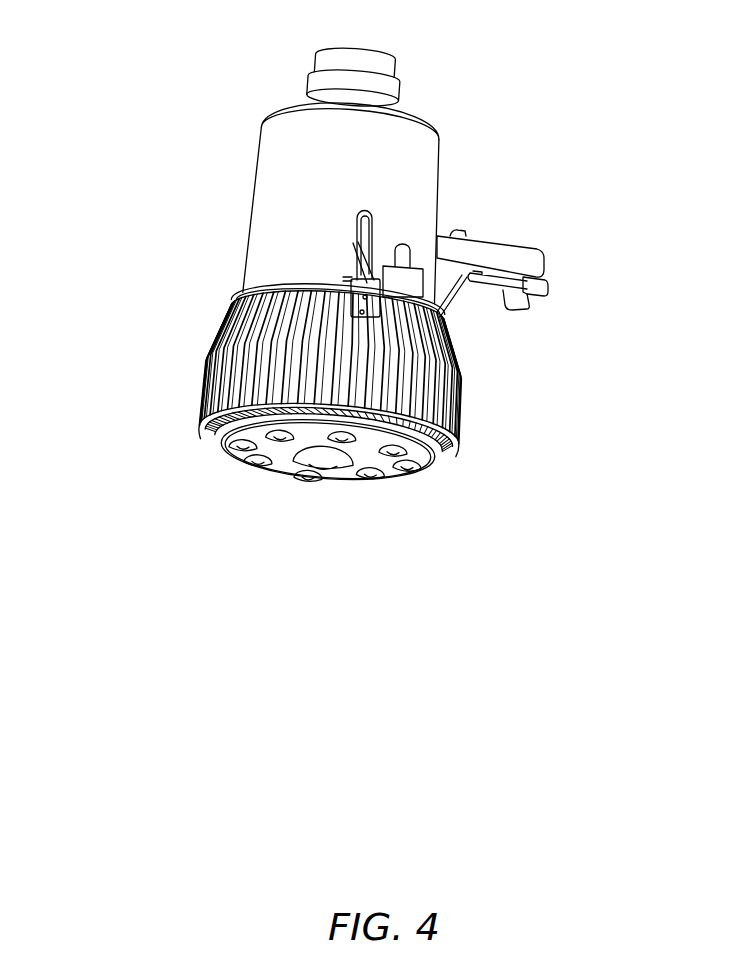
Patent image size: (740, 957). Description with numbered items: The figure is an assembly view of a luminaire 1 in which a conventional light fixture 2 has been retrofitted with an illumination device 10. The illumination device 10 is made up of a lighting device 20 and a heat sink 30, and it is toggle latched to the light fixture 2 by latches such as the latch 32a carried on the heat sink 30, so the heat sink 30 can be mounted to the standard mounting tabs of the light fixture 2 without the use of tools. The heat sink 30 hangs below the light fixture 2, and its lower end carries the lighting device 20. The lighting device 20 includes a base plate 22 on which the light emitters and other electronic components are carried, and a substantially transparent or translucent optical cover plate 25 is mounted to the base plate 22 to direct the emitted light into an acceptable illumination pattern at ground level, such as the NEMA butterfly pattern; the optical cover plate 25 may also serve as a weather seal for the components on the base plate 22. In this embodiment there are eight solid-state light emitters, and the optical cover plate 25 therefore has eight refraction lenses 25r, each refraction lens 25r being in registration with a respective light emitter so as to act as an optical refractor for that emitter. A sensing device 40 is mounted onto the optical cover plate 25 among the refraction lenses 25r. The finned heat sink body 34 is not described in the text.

The luminaire 1 is at (178, 56).
The light fixture 2 is at (438, 190).
The illumination device 10 is at (140, 298).
The lighting device 20 is at (452, 482).
The base plate 22 is at (226, 450).
The optical cover plate 25 is at (285, 458).
The refraction lenses 25r is at (367, 472).
The heat sink 30 is at (490, 358).
The latch 32a is at (367, 211).
The heat sink 34 is at (215, 343).
The sensing device 40 is at (330, 458).